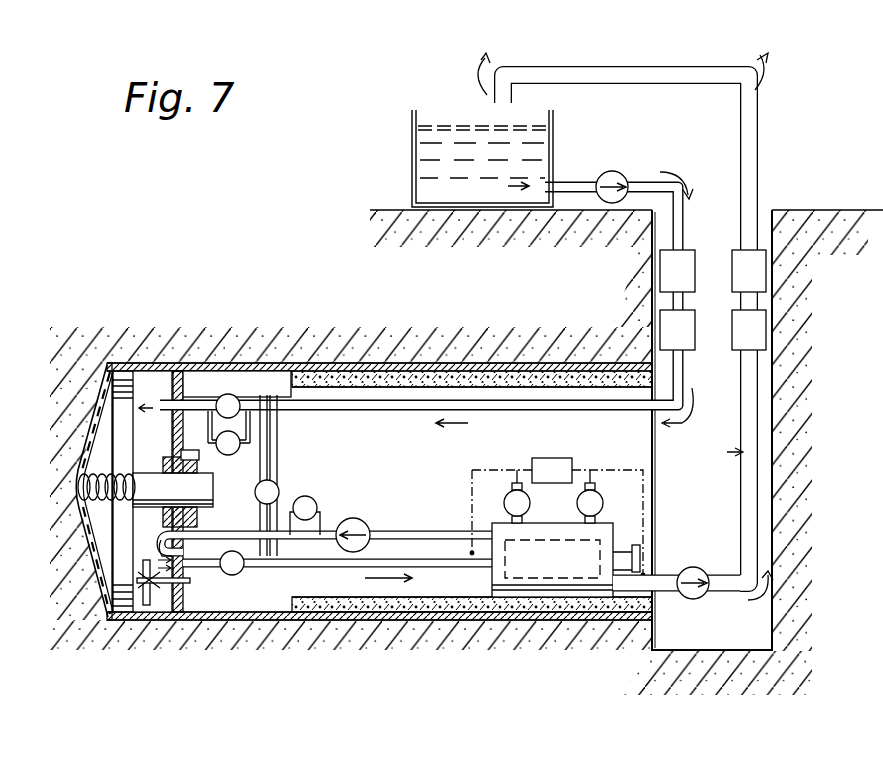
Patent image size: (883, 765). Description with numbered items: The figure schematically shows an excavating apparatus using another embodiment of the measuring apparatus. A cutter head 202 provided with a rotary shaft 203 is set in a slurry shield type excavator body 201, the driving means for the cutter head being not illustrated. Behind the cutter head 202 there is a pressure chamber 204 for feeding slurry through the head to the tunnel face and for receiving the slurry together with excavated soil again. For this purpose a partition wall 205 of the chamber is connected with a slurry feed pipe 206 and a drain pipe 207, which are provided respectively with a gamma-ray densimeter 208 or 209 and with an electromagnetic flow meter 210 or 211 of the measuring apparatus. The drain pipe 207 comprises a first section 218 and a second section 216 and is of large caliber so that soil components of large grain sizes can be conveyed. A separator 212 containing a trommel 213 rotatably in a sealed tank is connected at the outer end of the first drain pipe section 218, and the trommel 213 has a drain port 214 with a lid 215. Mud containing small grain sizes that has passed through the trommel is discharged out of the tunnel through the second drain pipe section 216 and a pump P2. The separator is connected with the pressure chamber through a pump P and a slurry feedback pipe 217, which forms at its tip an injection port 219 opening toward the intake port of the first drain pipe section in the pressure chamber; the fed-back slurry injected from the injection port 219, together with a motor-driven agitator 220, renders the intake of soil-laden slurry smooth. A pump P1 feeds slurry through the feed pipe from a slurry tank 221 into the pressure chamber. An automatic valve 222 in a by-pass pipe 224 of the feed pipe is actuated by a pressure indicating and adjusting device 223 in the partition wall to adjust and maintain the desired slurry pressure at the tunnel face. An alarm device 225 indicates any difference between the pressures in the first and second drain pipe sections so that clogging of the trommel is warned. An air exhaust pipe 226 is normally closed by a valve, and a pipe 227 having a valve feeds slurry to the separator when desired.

The excavator body 201 is at (215, 365).
The cutter head 202 is at (105, 428).
The rotary shaft 203 is at (149, 478).
The pressure chamber 204 is at (148, 383).
The partition wall 205 is at (237, 386).
The slurry feed pipe 206 is at (351, 410).
The drain pipe 207 is at (625, 326).
The gamma-ray densimeter 208 is at (666, 266).
The gamma-ray densimeter 209 is at (756, 266).
The electromagnetic flow meter 210 is at (664, 318).
The electromagnetic flow meter 211 is at (756, 326).
The separator 212 is at (492, 581).
The trommel 213 is at (545, 538).
The drain port 214 is at (622, 546).
The lid 215 is at (640, 558).
The second drain pipe section 216 is at (662, 590).
The slurry feedback pipe 217 is at (422, 527).
The first drain pipe section 218 is at (322, 558).
The injection port 219 is at (162, 553).
The agitator 220 is at (169, 596).
The slurry tank 221 is at (553, 134).
The automatic valve 222 is at (218, 454).
The pressure indicating and adjusting device 223 is at (246, 475).
The by-pass pipe 224 is at (246, 409).
The alarm device 225 is at (552, 458).
The air exhaust pipe 226 is at (515, 486).
The pipe 227 is at (591, 488).
The pump P is at (368, 518).
The pump P1 is at (612, 170).
The pump P2 is at (693, 567).